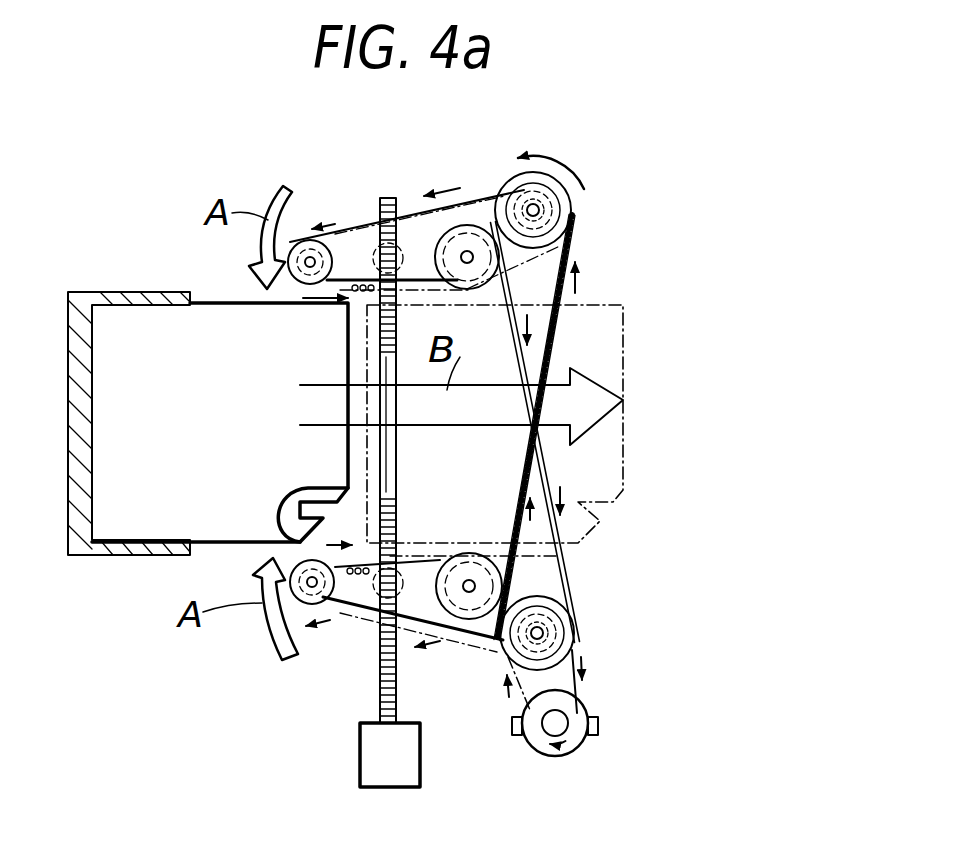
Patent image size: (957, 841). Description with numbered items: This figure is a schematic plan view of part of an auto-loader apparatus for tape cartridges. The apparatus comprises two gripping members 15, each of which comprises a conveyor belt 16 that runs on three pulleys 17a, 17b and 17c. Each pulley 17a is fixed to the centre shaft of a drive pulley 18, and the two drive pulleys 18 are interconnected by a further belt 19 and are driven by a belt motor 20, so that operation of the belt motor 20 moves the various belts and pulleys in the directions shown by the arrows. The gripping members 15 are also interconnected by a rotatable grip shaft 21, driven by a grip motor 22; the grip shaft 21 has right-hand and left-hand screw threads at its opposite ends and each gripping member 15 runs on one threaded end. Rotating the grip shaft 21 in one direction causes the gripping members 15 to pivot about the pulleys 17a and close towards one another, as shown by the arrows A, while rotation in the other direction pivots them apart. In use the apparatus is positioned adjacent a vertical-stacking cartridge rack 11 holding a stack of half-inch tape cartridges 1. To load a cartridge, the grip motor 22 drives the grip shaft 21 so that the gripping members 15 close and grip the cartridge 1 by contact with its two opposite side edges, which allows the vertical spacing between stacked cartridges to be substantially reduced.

The tape cartridge 1 is at (130, 318).
The cartridge rack 11 is at (76, 290).
The gripping member 15 is at (418, 235).
The conveyor belt 16 is at (380, 224).
The pulley 17a is at (571, 207).
The pulley 17b is at (488, 225).
The pulley 17c is at (296, 243).
The drive pulley 18 is at (563, 183).
The further belt 19 is at (553, 360).
The belt motor 20 is at (575, 715).
The grip shaft 21 is at (407, 694).
The grip motor 22 is at (360, 758).